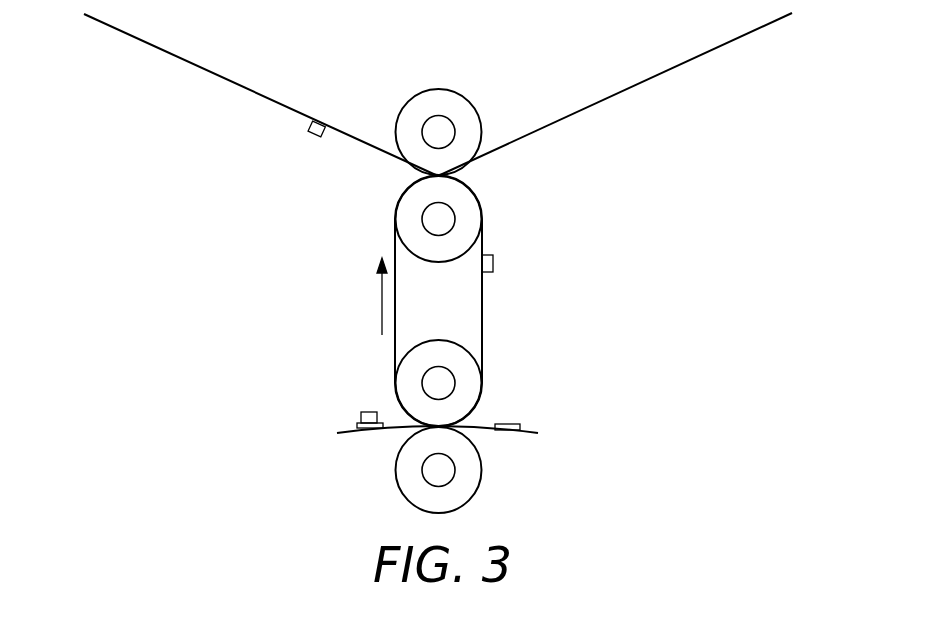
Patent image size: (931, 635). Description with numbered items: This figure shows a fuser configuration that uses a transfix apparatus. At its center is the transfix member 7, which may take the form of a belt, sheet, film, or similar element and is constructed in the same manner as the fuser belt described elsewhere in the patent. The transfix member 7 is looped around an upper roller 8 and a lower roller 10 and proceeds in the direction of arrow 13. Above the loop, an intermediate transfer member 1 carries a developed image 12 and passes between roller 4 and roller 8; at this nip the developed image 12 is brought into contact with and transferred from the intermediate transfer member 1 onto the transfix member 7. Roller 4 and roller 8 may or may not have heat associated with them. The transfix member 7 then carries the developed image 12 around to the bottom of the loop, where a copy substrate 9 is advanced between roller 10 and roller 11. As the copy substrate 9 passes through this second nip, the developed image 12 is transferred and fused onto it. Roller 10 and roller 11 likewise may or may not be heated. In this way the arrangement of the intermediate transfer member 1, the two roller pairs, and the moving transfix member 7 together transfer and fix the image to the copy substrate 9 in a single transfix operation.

The intermediate transfer member 1 is at (253, 90).
The roller 4 is at (448, 92).
The transfix member 7 is at (482, 325).
The roller 8 is at (468, 212).
The copy substrate 9 is at (508, 423).
The roller 10 is at (470, 373).
The roller 11 is at (482, 467).
The developed image 12 is at (323, 140).
The arrow 13 is at (380, 300).